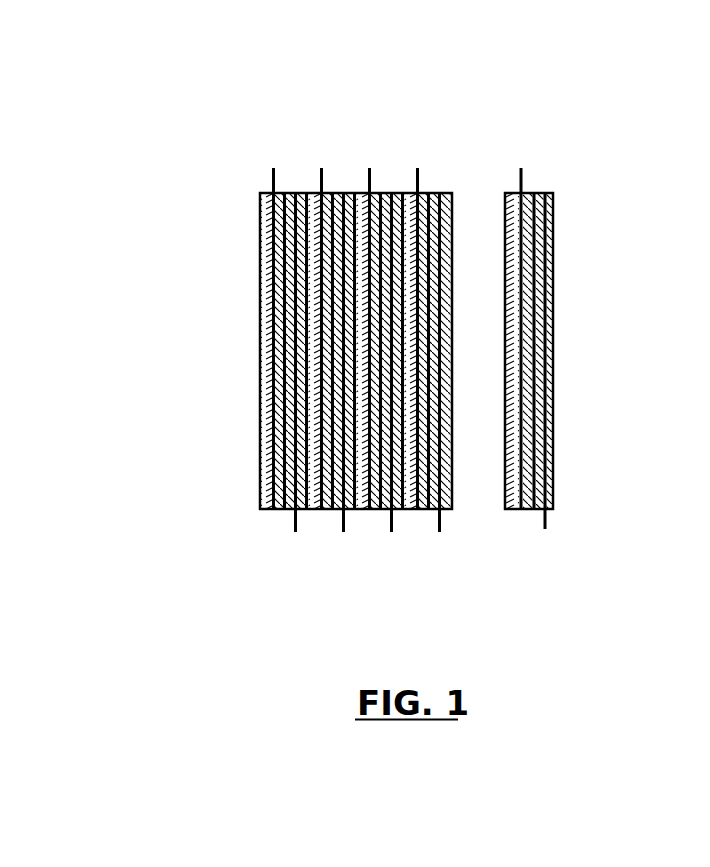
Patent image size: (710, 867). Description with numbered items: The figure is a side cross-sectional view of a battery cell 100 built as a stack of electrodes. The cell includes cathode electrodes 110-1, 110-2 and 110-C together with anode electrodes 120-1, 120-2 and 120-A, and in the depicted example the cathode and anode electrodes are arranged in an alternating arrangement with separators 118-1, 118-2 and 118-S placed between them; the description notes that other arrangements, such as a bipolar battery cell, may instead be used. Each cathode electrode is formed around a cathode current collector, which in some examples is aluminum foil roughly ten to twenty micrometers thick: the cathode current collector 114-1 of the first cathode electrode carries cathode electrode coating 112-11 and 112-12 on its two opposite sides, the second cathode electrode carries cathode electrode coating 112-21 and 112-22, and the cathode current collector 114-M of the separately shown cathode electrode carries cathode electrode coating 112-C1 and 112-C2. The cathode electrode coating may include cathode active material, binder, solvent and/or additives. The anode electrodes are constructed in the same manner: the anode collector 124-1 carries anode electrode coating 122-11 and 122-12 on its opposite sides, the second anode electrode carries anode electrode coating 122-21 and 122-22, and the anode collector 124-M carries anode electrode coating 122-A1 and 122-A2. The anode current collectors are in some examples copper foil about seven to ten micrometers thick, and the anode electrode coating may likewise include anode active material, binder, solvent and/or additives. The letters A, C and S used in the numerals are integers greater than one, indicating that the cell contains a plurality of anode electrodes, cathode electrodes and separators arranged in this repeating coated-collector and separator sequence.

The battery cell 100 is at (302, 66).
The cathode electrode 110-1 is at (249, 200).
The cathode electrode 110-2 is at (336, 101).
The cathode electrode 110-C is at (532, 101).
The cathode electrode coating 112-11 is at (266, 192).
The cathode electrode coating 112-12 is at (278, 238).
The cathode electrode coating 112-21 is at (316, 192).
The cathode electrode coating 112-22 is at (326, 192).
The cathode electrode coating 112-C1 is at (518, 192).
The cathode electrode coating 112-C2 is at (525, 192).
The cathode current collector 114-1 is at (272, 168).
The cathode current collector 114-M is at (523, 172).
The separator 118-1 is at (285, 305).
The separator 118-2 is at (308, 342).
The separator 118-S is at (540, 331).
The anode electrode 120-1 is at (296, 589).
The anode electrode 120-2 is at (350, 572).
The anode electrode 120-A is at (559, 522).
The anode electrode coating 122-11 is at (288, 510).
The anode electrode coating 122-12 is at (300, 512).
The anode electrode coating 122-21 is at (340, 512).
The anode electrode coating 122-22 is at (347, 512).
The anode electrode coating 122-A1 is at (542, 512).
The anode electrode coating 122-A2 is at (550, 512).
The anode collector 124-1 is at (294, 524).
The anode collector 124-M is at (541, 522).